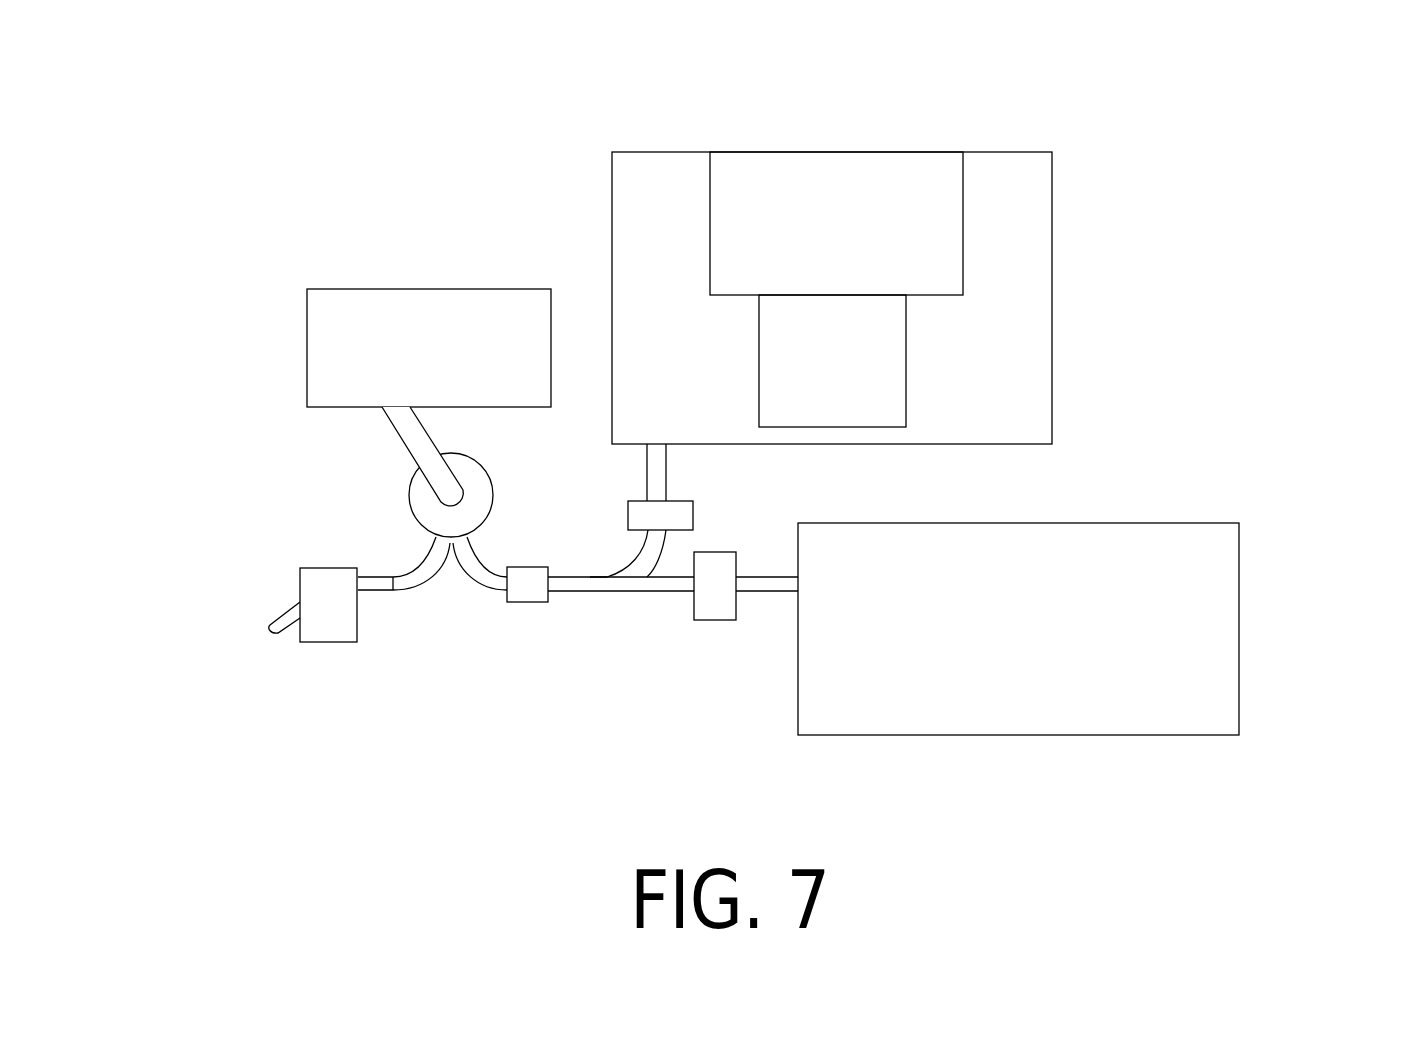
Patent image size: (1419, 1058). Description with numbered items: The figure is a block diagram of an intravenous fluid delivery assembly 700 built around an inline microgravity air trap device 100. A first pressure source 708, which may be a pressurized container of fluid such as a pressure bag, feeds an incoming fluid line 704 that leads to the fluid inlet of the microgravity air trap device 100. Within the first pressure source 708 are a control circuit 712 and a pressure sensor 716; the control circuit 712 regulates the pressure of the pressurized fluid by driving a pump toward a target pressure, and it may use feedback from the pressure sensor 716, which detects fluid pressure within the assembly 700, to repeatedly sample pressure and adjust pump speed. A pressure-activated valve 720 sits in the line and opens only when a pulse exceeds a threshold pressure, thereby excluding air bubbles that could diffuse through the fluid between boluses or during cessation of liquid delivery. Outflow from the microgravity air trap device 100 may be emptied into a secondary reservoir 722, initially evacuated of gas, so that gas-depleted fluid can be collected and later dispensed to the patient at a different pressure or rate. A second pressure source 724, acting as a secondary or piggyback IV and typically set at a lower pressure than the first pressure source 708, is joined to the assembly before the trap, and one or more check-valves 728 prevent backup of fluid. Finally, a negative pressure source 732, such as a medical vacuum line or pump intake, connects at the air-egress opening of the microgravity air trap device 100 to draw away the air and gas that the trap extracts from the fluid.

The intravenous fluid delivery assembly 700 is at (377, 143).
The microgravity air trap device 100 is at (420, 513).
The incoming fluid line 704 is at (592, 578).
The first pressure source 708 is at (1053, 331).
The control circuit 712 is at (856, 228).
The pressure sensor 716 is at (868, 408).
The pressure-activated valve 720 is at (527, 603).
The secondary reservoir 722 is at (338, 643).
The second pressure source 724 is at (1240, 669).
The check-valve 728 is at (628, 517).
The negative pressure source 732 is at (445, 368).